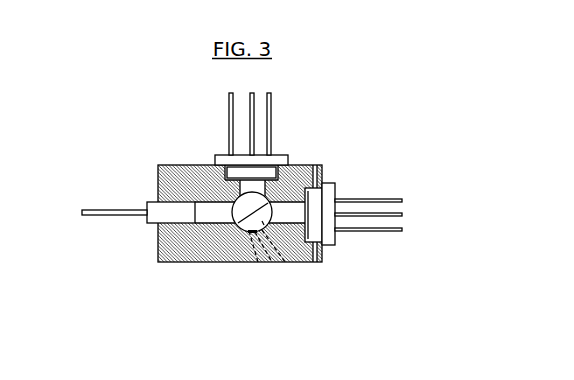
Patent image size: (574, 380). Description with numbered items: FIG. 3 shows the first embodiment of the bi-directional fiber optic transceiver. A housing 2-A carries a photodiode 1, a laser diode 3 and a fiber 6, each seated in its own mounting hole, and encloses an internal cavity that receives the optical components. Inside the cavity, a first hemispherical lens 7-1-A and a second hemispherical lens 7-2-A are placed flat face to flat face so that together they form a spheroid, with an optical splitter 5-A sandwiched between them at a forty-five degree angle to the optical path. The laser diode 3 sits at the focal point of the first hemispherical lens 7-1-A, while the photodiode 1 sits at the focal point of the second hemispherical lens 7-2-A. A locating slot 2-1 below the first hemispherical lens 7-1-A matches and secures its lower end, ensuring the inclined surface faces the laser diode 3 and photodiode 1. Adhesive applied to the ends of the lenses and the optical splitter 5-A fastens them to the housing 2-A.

The photodiode 1 is at (263, 160).
The laser diode 3 is at (328, 204).
The fiber 6 is at (150, 218).
The housing 2-A is at (170, 192).
The locating slot 2-1 is at (282, 262).
The optical splitter 5-A is at (258, 262).
The first hemispherical lens 7-1-A is at (271, 262).
The second hemispherical lens 7-2-A is at (232, 200).